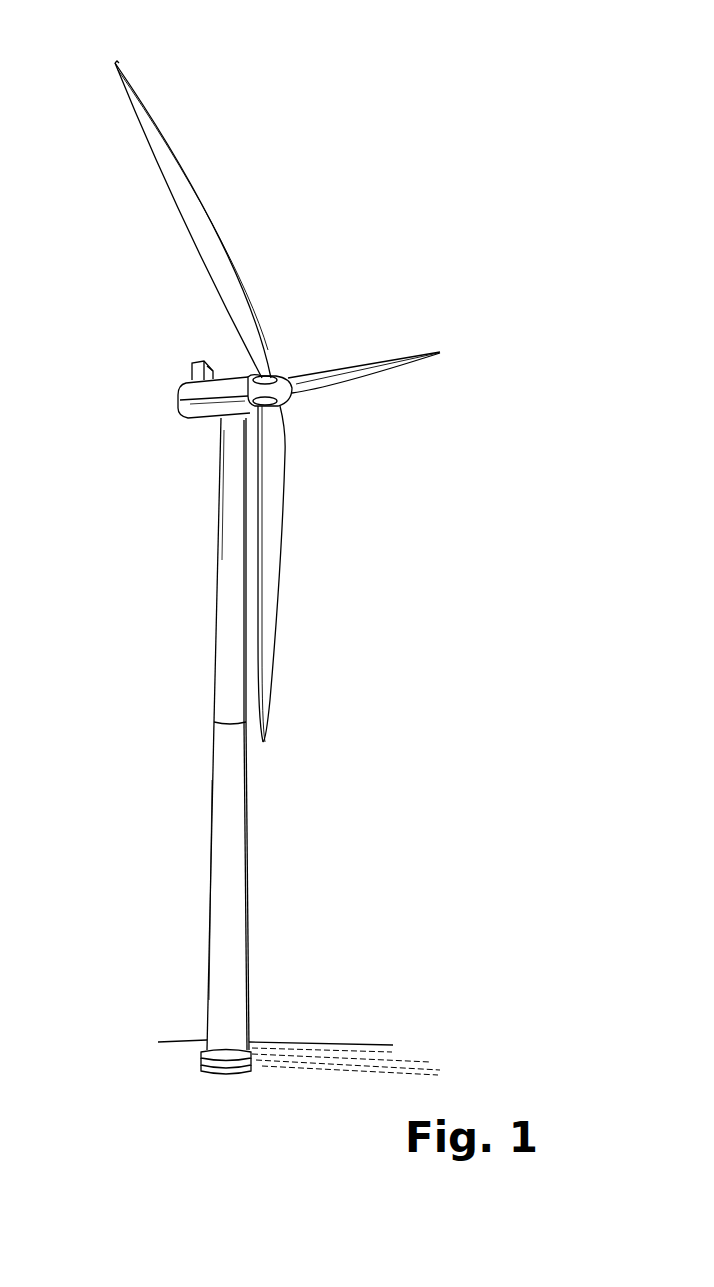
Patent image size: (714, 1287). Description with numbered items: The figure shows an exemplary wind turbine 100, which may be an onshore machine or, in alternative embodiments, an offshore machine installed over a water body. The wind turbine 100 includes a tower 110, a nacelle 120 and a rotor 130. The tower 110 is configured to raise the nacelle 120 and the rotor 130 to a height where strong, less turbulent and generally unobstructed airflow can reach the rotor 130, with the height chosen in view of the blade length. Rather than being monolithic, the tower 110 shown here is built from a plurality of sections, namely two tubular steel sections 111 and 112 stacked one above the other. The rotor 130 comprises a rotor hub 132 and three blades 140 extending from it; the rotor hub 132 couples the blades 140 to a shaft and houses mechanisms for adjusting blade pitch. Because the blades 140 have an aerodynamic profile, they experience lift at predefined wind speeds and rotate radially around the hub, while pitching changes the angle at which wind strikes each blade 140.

The wind turbine 100 is at (384, 259).
The tower 110 is at (212, 615).
The tubular steel section 111 is at (213, 884).
The tubular steel section 112 is at (220, 557).
The nacelle 120 is at (170, 395).
The rotor 130 is at (285, 398).
The rotor hub 132 is at (272, 375).
The blade 140 is at (147, 140).